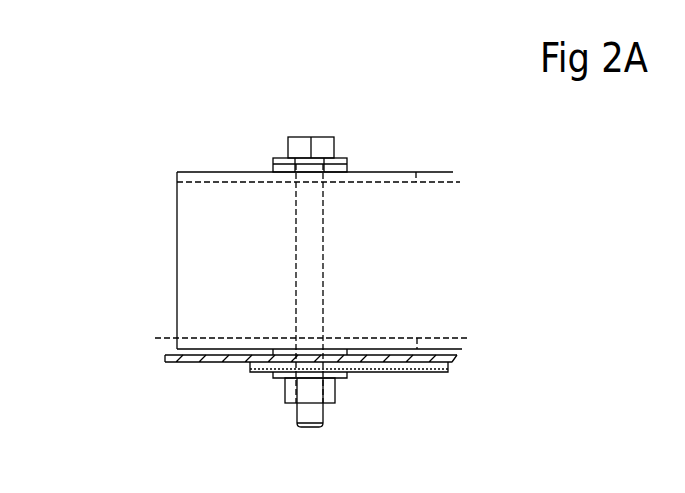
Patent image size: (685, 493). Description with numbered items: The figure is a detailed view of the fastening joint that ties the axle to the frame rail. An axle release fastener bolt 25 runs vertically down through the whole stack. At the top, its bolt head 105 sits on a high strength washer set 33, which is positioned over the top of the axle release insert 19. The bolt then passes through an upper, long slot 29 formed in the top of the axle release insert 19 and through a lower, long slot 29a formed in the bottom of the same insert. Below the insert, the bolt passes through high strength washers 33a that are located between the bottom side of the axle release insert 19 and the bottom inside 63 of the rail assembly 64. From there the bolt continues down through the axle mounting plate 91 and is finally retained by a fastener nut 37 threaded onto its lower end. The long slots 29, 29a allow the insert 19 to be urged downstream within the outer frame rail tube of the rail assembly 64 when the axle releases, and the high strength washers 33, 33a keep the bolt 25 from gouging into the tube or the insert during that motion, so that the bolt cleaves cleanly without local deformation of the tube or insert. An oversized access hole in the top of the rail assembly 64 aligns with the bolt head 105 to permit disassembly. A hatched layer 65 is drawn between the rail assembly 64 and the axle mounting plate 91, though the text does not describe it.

The axle release insert 19 is at (194, 178).
The upper long slot 29 is at (398, 175).
The lower long slot 29a is at (392, 338).
The bolt head 105 is at (302, 134).
The high strength washer set 33 is at (350, 162).
The axle release fastener bolt 25 is at (313, 278).
The high strength washers 33a is at (278, 350).
The bottom inside of rail assembly 63 is at (170, 349).
The rail assembly 64 is at (175, 360).
The bottom layer 65 is at (188, 365).
The axle mounting plate 91 is at (385, 368).
The fastener nut 37 is at (287, 395).